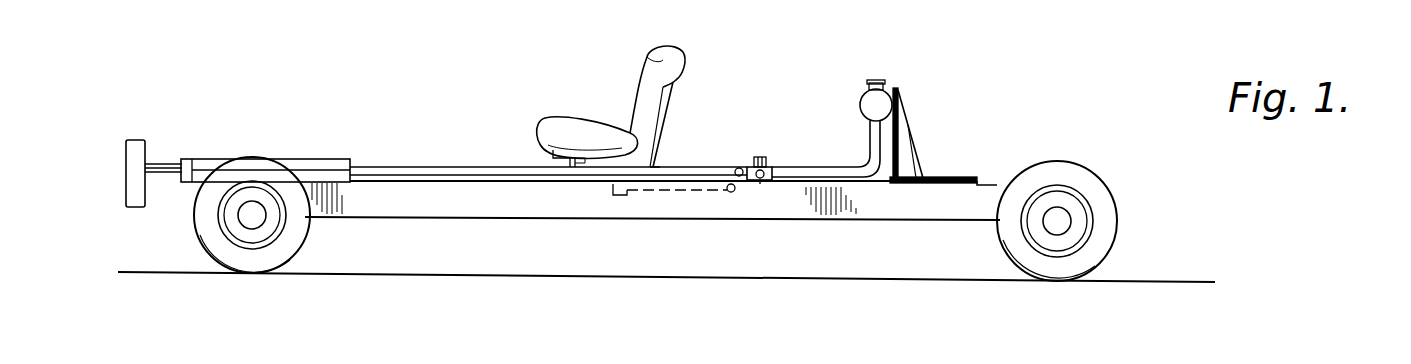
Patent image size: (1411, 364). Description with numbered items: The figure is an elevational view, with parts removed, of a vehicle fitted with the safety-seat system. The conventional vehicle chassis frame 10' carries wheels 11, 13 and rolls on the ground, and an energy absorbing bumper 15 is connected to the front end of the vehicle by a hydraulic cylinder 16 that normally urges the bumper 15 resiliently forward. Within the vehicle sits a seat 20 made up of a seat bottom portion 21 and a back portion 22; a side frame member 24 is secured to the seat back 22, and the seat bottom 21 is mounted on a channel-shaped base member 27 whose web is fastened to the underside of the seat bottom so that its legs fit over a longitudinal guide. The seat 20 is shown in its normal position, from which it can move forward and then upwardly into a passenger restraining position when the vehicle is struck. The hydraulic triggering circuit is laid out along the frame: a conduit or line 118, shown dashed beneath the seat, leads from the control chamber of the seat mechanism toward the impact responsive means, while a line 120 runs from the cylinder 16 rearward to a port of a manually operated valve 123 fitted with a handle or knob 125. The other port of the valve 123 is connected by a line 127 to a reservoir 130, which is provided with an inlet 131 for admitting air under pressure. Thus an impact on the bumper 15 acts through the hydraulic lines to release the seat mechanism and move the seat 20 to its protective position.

The vehicle chassis frame 10' is at (652, 154).
The wheel 11 is at (208, 240).
The wheel 13 is at (1098, 245).
The energy absorbing bumper 15 is at (141, 140).
The hydraulic cylinder 16 is at (335, 165).
The seat 20 is at (594, 96).
The seat bottom portion 21 is at (566, 119).
The back portion 22 is at (656, 50).
The side frame member 24 is at (665, 115).
The base member 27 is at (553, 158).
The conduit or line 118 is at (668, 195).
The line or conduit 120 is at (450, 166).
The valve 123 is at (763, 184).
The handle or knob 125 is at (762, 157).
The line 127 is at (870, 140).
The reservoir 130 is at (868, 98).
The inlet 131 is at (884, 82).